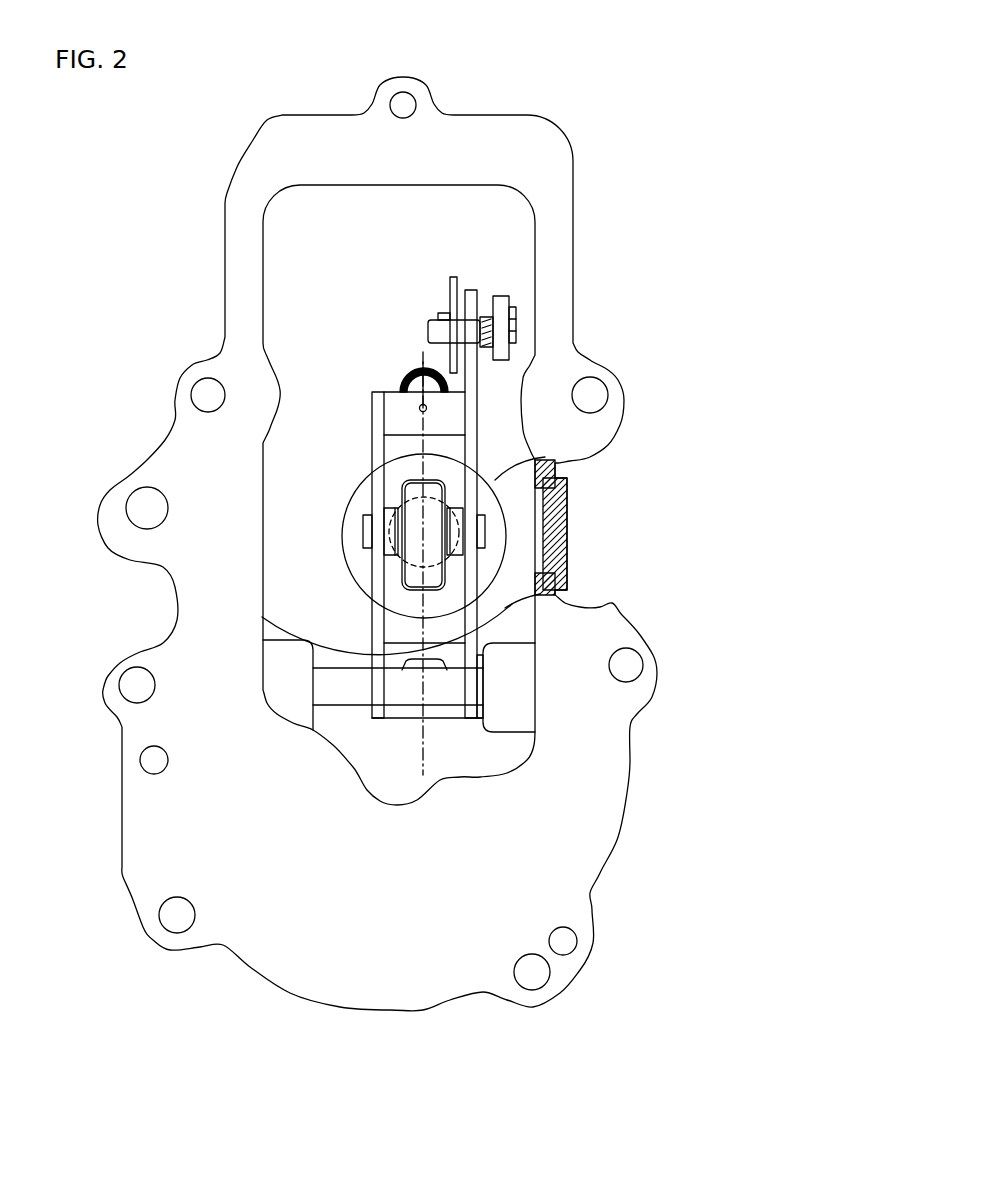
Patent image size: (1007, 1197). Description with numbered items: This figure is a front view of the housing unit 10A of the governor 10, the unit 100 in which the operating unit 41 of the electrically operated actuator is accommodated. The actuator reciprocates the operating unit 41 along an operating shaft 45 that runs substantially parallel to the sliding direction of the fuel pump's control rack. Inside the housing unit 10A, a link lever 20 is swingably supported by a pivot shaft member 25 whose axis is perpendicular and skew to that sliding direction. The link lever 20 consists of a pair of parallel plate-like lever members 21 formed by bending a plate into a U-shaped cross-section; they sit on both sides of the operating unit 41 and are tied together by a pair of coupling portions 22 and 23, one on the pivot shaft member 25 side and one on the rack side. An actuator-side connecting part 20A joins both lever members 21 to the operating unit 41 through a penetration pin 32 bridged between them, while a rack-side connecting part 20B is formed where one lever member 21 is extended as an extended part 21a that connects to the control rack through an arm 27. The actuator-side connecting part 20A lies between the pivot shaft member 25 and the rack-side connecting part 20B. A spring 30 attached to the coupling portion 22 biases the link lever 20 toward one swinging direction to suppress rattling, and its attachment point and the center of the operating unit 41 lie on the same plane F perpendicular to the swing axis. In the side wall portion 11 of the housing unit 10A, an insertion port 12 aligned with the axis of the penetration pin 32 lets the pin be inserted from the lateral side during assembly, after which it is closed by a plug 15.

The throttle device 100 is at (650, 78).
The governor 10 is at (483, 113).
The housing unit 10A is at (285, 275).
The side wall portion 11 is at (553, 470).
The plug 15 is at (568, 523).
The insertion port 12 is at (570, 560).
The link lever 20 is at (395, 523).
The actuator-side connecting part 20A is at (413, 527).
The rack-side connecting part 20B is at (515, 297).
The lever members 21 is at (470, 457).
The extended part 21a is at (470, 293).
The coupling portion 22 is at (392, 403).
The coupling portion 23 is at (403, 652).
The pivot shaft member 25 is at (397, 695).
The arm 27 is at (498, 312).
The spring 30 is at (403, 358).
The penetration pin 32 is at (363, 530).
The operating unit 41 is at (420, 530).
The operating shaft 45 is at (452, 497).